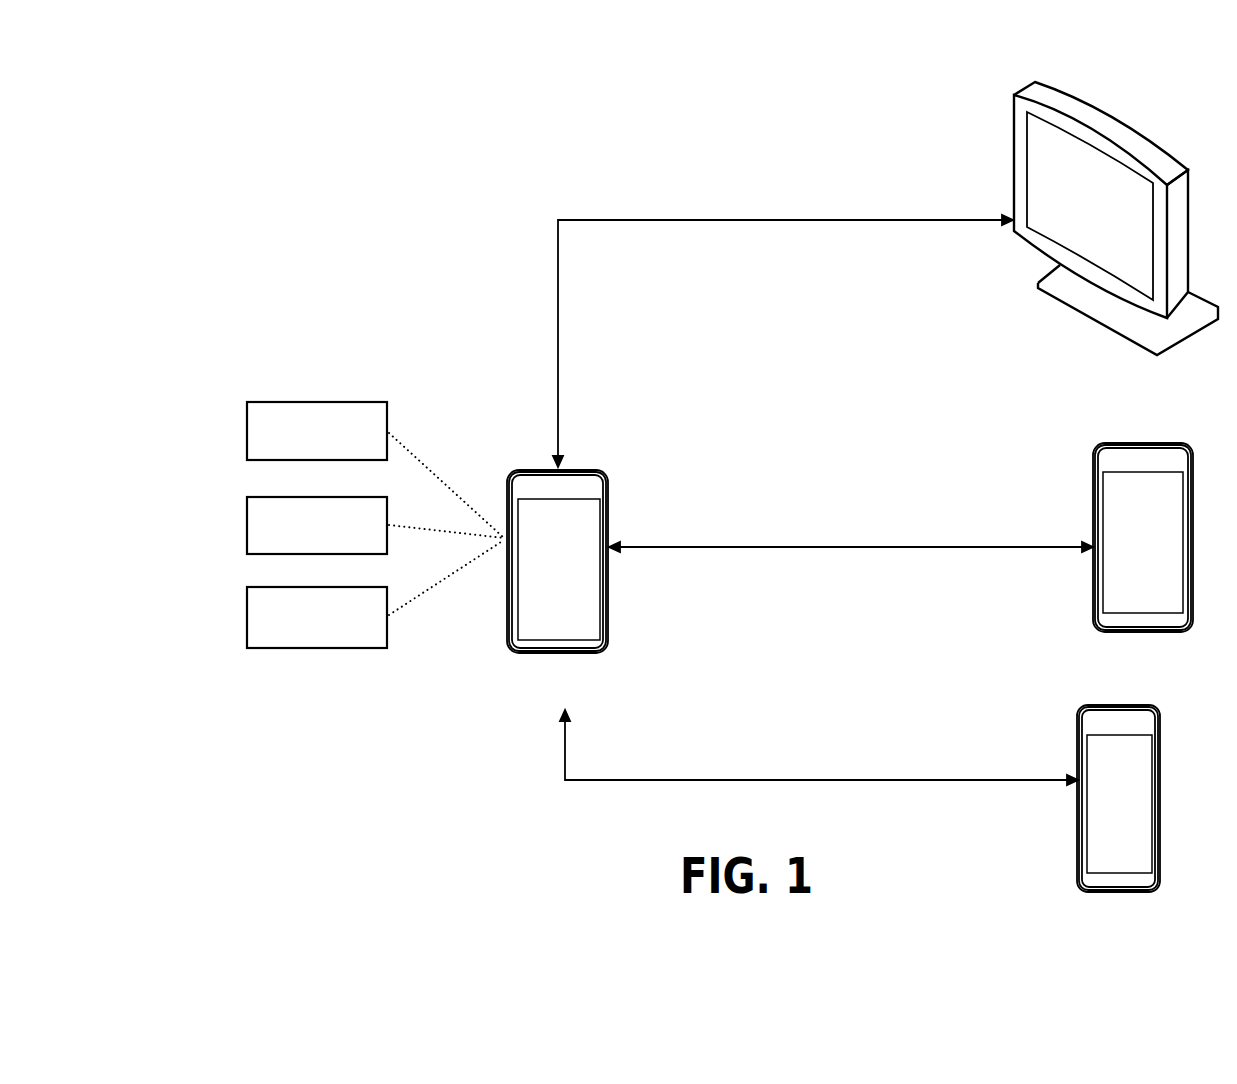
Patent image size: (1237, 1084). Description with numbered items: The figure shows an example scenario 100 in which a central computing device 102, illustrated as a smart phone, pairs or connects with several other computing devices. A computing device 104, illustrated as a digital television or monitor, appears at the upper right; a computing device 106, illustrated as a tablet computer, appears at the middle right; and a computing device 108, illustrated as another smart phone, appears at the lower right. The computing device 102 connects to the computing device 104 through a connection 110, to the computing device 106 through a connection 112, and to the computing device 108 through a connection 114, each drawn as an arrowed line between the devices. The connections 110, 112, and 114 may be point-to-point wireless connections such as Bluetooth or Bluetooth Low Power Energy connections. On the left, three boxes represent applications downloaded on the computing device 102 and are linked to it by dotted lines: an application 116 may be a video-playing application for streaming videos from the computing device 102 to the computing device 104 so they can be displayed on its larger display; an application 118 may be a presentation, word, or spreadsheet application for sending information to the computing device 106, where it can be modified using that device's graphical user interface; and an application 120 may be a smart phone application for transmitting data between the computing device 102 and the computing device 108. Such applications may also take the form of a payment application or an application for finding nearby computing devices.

The scenario 100 is at (237, 118).
The computing device 102 is at (553, 590).
The computing device 104 is at (1116, 248).
The computing device 106 is at (1139, 563).
The computing device 108 is at (1121, 823).
The connection 110 is at (811, 220).
The connection 112 is at (811, 547).
The connection 114 is at (811, 780).
The application 116 is at (375, 470).
The application 118 is at (375, 525).
The application 120 is at (375, 594).